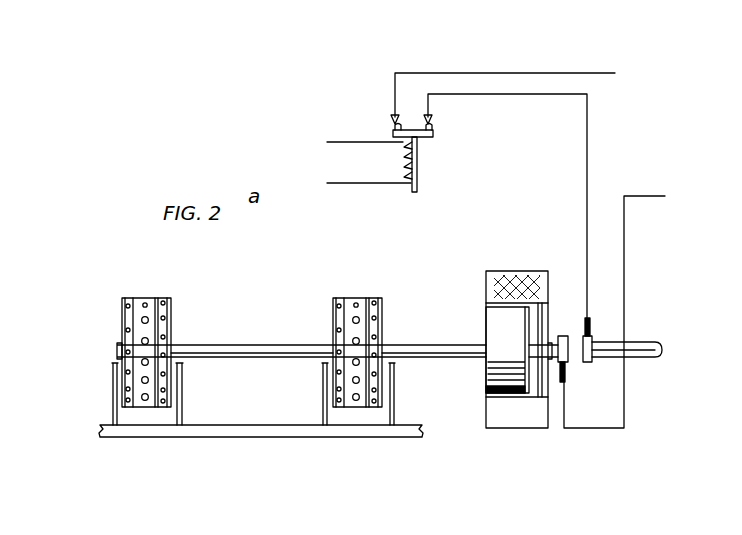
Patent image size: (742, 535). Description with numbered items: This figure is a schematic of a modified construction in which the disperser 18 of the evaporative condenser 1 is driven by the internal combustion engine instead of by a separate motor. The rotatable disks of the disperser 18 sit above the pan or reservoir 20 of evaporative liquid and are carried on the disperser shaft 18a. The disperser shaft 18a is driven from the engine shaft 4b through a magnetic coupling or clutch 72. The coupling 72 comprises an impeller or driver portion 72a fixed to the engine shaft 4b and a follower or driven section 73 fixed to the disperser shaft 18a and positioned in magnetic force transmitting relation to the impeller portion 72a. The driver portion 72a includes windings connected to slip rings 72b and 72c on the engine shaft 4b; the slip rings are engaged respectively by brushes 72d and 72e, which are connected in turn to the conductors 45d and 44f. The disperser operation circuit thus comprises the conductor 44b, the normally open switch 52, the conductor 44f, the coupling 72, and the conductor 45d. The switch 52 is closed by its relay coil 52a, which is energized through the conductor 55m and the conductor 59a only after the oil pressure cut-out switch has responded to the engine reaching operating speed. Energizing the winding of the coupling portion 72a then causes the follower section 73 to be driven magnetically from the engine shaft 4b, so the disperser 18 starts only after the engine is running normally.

The evaporative condenser 1 is at (261, 429).
The pan or reservoir 20 is at (235, 412).
The disperser 18 is at (160, 315).
The disperser shaft 18a is at (416, 357).
The magnetic coupling or clutch 72 is at (506, 345).
The impeller or driver portion 72a is at (527, 272).
The slip ring 72b is at (561, 336).
The slip ring 72c is at (589, 362).
The brush 72d is at (566, 380).
The brush 72e is at (590, 318).
The follower or driven section 73 is at (487, 387).
The internal combustion engine shaft 4b is at (643, 346).
The conductor 44b is at (476, 73).
The conductor 44f is at (586, 137).
The conductor 45d is at (650, 196).
The disperser motor switch 52 is at (387, 118).
The relay coil 52a is at (418, 180).
The conductor 55m is at (370, 183).
The line 59a is at (335, 142).